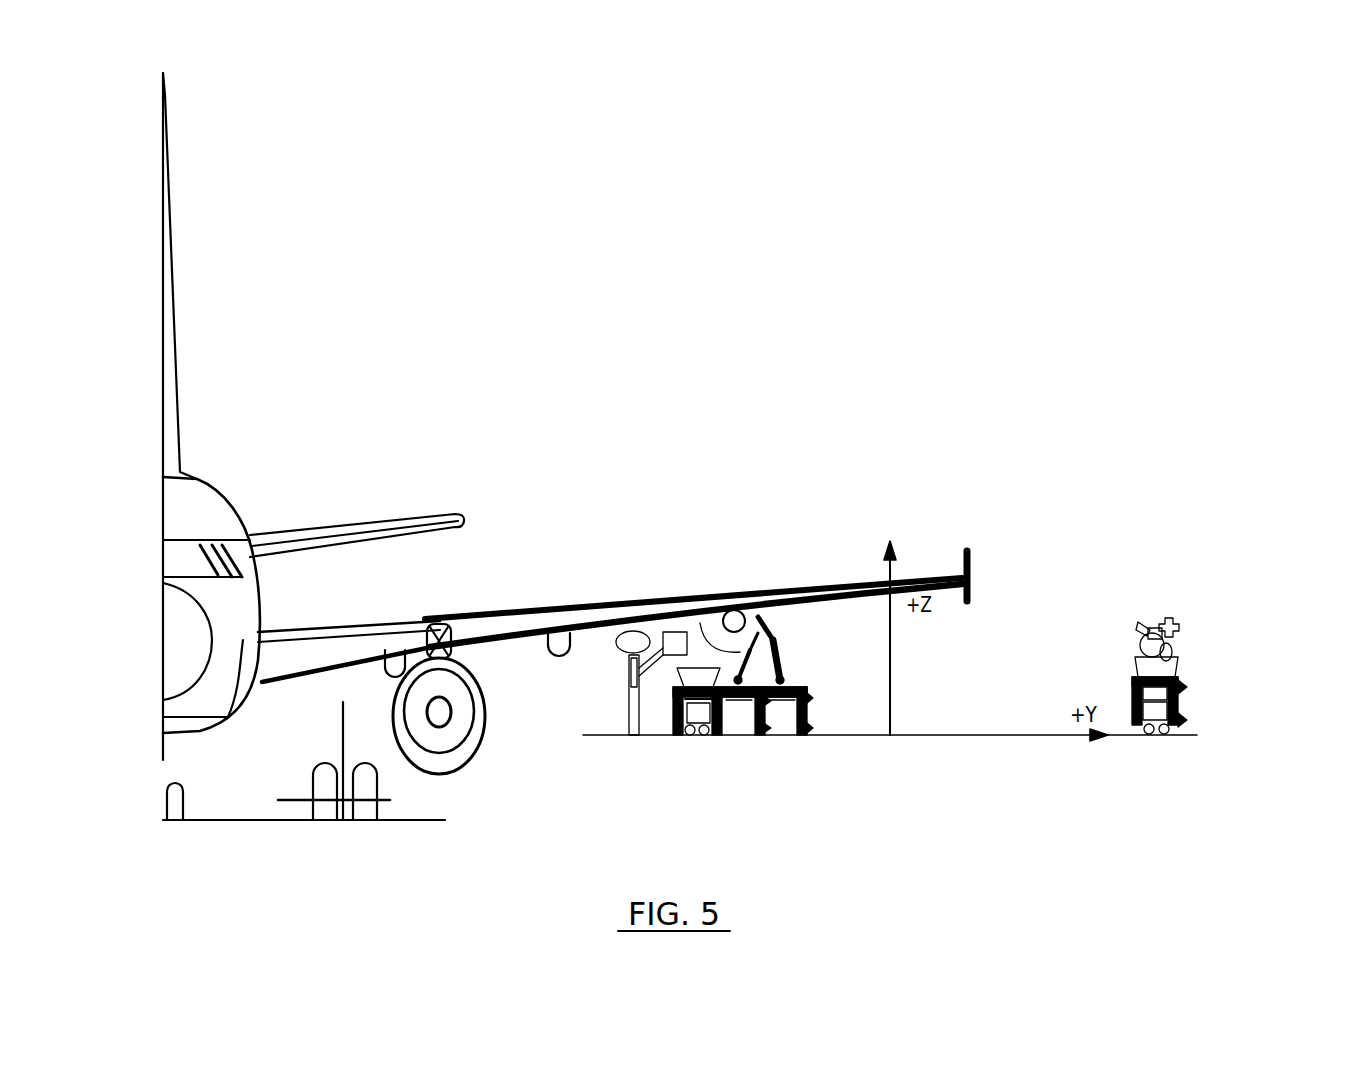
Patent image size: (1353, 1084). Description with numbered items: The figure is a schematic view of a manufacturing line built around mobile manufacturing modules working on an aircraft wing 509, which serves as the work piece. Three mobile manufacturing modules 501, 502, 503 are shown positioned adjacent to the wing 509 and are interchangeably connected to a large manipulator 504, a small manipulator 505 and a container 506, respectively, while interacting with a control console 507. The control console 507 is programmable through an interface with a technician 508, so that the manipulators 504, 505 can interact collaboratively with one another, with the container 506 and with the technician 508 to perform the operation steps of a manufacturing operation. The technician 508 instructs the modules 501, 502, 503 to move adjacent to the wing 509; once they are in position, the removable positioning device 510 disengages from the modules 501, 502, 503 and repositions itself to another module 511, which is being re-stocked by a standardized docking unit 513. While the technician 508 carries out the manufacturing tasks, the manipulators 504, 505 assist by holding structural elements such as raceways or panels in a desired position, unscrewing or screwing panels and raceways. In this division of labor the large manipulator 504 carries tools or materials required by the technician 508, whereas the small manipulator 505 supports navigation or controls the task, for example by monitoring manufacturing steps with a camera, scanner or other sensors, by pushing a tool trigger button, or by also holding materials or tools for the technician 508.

The mobile manufacturing module 501 is at (785, 697).
The mobile manufacturing module 502 is at (740, 697).
The mobile manufacturing module 503 is at (673, 708).
The large manipulator 504 is at (780, 648).
The small manipulator 505 is at (703, 628).
The container 506 is at (697, 628).
The control console 507 is at (675, 638).
The technician 508 is at (632, 692).
The wing 509 is at (923, 575).
The removable positioning device 510 is at (697, 735).
The module 511 is at (1180, 702).
The standardized docking unit 513 is at (1157, 662).